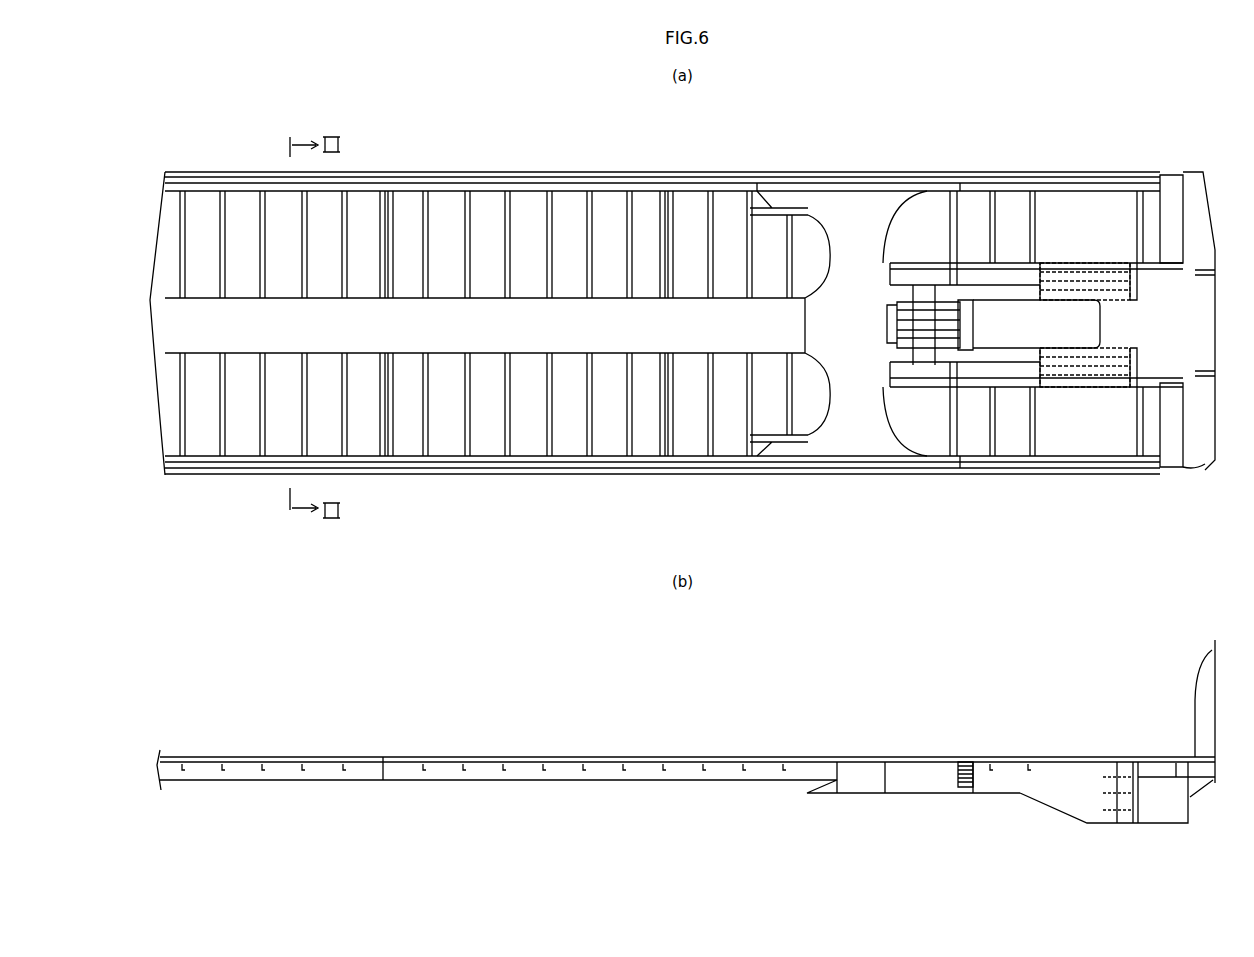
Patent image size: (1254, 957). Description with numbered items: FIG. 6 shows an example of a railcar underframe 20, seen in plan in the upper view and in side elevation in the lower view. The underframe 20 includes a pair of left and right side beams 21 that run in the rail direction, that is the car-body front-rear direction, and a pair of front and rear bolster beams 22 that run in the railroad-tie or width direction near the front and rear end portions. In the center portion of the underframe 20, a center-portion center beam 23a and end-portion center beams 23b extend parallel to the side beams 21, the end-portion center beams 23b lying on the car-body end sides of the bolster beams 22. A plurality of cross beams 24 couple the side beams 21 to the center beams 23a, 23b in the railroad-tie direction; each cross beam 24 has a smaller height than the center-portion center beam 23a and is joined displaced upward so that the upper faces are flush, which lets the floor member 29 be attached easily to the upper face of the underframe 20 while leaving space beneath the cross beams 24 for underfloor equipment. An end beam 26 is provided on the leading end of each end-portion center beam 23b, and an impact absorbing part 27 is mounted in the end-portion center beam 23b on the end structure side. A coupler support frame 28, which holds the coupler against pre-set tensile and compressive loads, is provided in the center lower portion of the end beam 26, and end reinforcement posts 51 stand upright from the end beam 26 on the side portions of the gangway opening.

The underframe 20 is at (695, 134).
The side beam 21 is at (545, 191).
The bolster beam 22 is at (865, 443).
The center-portion center beam 23a is at (452, 353).
The end-portion center beam 23b is at (928, 300).
The cross beam 24 is at (262, 262).
The end beam 26 is at (1172, 467).
The impact absorbing part 27 is at (1086, 390).
The coupler support frame 28 is at (1152, 823).
The floor member 29 is at (410, 757).
The end reinforcement post 51 is at (1195, 272).